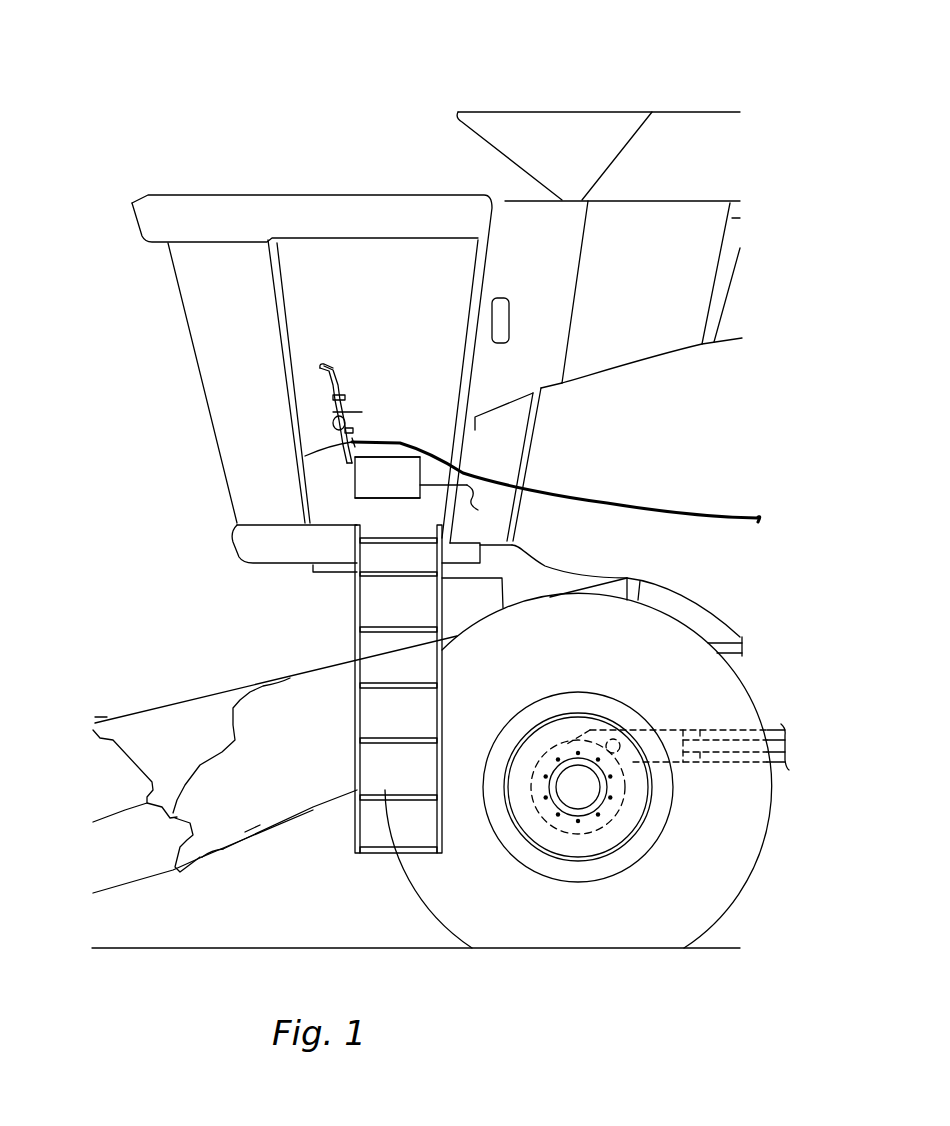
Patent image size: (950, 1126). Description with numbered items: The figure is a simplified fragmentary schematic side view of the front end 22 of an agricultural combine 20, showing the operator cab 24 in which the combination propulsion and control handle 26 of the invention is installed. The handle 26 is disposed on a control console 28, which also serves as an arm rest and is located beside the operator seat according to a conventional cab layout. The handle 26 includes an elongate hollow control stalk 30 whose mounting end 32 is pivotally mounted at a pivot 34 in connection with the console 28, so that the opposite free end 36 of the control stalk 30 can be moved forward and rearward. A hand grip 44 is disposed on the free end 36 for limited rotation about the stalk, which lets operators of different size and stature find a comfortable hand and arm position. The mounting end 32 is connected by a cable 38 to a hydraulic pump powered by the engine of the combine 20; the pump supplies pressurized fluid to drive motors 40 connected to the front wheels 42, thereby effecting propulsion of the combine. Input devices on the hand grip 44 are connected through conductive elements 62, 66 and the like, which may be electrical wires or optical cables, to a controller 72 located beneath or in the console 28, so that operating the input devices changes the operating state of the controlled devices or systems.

The agricultural combine 20 is at (601, 78).
The front end 22 is at (313, 572).
The operator cab 24 is at (262, 193).
The combination propulsion and control handle 26 is at (325, 352).
The control console 28 is at (352, 442).
The control stalk 30 is at (362, 412).
The mounting end 32 is at (333, 438).
The pivot 34 is at (353, 442).
The free end 36 is at (333, 415).
The cable 38 is at (605, 500).
The drive motors 40 is at (680, 763).
The front wheels 42 is at (727, 907).
The hand grip 44 is at (338, 375).
The conductive element 62 is at (352, 465).
The conductive element 66 is at (472, 497).
The controller 72 is at (333, 398).